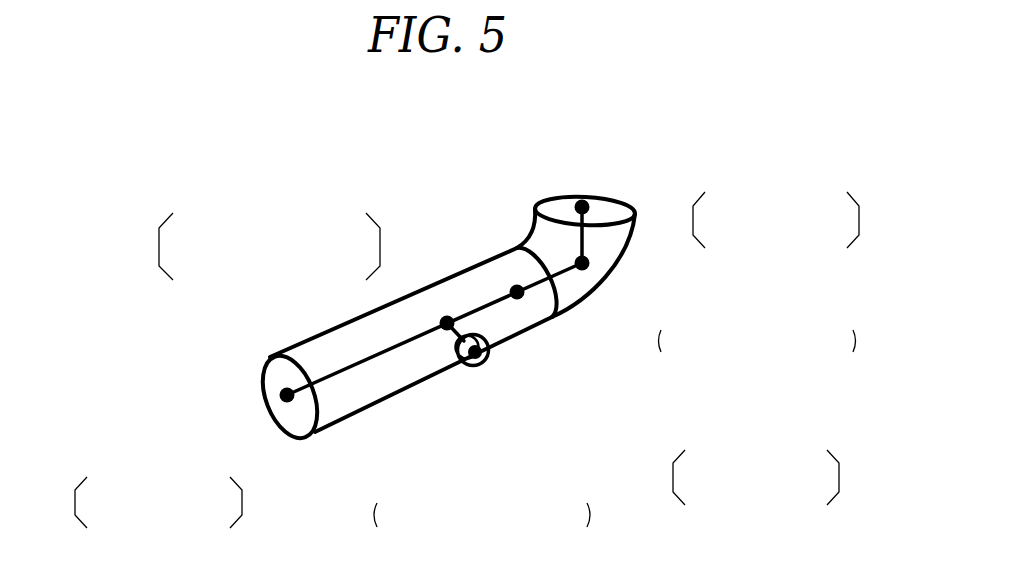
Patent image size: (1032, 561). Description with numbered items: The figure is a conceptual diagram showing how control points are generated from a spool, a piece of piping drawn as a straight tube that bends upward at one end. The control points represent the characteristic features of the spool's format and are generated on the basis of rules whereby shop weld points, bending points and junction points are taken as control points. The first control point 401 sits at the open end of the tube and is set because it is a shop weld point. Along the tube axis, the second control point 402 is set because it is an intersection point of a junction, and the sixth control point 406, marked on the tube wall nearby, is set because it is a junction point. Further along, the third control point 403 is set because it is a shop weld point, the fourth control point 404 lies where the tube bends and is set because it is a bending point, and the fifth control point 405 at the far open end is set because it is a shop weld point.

The control point 1 401 is at (280, 394).
The control point 2 402 is at (447, 315).
The control point 3 403 is at (522, 295).
The control point 4 404 is at (588, 265).
The control point 5 405 is at (588, 200).
The control point 6 406 is at (484, 363).